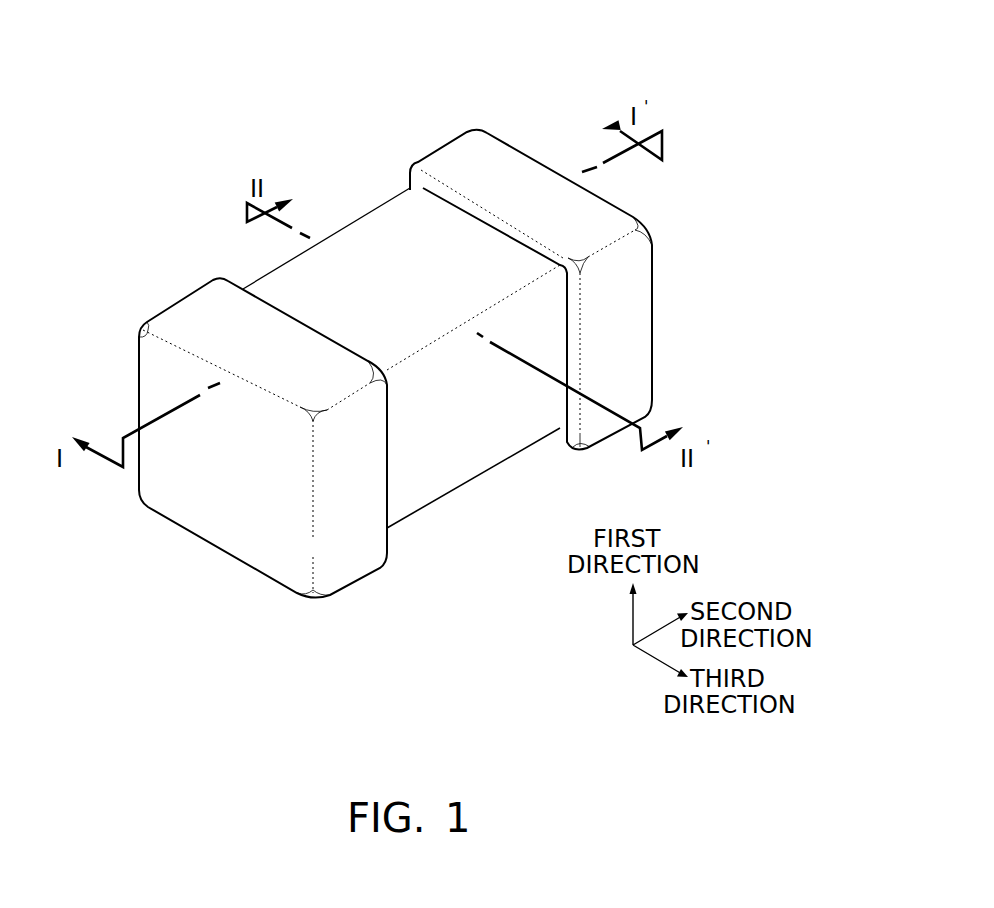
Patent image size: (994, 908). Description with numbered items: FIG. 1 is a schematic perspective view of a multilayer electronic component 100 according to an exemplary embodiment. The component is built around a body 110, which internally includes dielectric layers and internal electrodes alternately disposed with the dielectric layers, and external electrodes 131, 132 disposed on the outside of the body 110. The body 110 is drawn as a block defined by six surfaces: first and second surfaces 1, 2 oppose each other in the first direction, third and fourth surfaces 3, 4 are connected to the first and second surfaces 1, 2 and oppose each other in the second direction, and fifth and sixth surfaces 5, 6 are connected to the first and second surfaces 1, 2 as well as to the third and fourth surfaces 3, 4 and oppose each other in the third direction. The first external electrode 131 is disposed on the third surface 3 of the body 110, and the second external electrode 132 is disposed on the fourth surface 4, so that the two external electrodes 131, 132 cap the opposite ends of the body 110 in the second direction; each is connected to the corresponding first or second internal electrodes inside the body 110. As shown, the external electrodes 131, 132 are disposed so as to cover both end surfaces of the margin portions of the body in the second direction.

The multilayer electronic component 100 is at (187, 98).
The body 110 is at (275, 297).
The first external electrode 131 is at (197, 310).
The second external electrode 132 is at (453, 163).
The first surface 1 is at (437, 450).
The second surface 2 is at (412, 245).
The third surface 3 is at (233, 497).
The fourth surface 4 is at (600, 305).
The fifth surface 5 is at (358, 268).
The sixth surface 6 is at (493, 420).